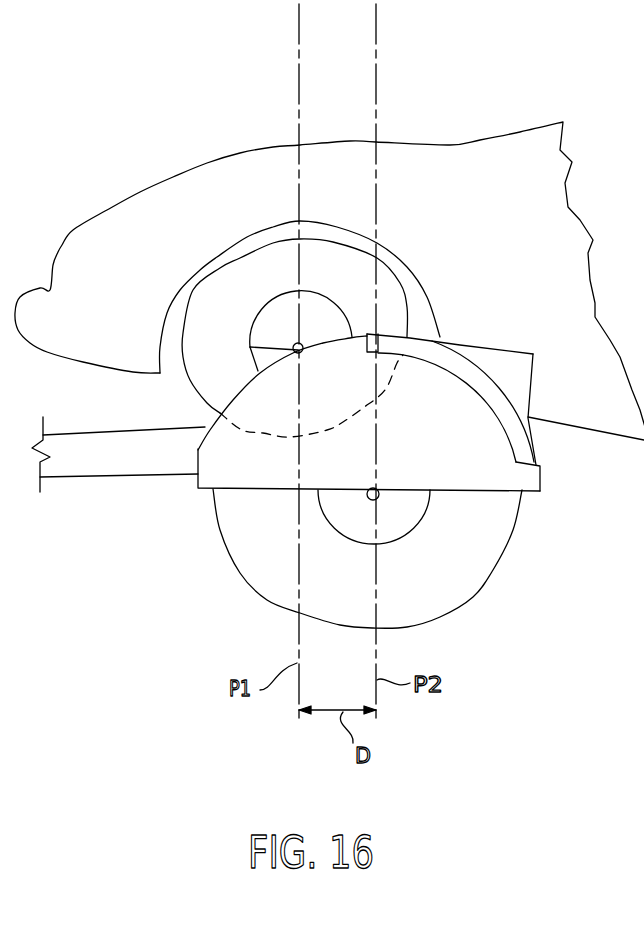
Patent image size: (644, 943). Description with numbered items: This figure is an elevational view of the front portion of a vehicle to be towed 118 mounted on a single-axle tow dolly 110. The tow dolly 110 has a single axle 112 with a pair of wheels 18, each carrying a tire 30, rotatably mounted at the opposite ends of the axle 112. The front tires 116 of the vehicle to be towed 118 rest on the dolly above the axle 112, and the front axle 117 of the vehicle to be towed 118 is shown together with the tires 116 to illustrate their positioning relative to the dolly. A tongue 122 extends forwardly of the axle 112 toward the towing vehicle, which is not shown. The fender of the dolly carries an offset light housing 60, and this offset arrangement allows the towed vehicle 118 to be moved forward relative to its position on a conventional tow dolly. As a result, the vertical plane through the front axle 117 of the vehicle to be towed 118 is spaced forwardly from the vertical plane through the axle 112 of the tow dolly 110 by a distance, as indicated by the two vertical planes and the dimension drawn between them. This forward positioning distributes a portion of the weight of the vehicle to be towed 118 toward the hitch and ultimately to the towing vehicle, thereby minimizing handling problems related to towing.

The wheel 18 is at (473, 555).
The tire 30 is at (410, 515).
The offset light housing 60 is at (518, 383).
The tow dolly 110 is at (533, 592).
The axle 112 is at (367, 500).
The tire 116 is at (330, 320).
The front axle 117 is at (250, 347).
The vehicle to be towed 118 is at (518, 163).
The tongue 122 is at (137, 463).